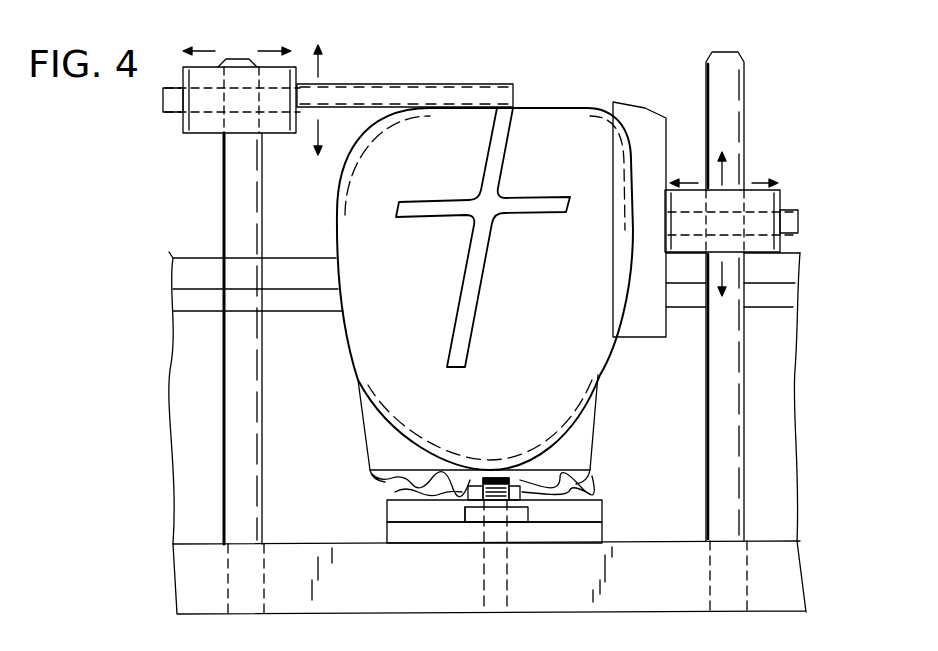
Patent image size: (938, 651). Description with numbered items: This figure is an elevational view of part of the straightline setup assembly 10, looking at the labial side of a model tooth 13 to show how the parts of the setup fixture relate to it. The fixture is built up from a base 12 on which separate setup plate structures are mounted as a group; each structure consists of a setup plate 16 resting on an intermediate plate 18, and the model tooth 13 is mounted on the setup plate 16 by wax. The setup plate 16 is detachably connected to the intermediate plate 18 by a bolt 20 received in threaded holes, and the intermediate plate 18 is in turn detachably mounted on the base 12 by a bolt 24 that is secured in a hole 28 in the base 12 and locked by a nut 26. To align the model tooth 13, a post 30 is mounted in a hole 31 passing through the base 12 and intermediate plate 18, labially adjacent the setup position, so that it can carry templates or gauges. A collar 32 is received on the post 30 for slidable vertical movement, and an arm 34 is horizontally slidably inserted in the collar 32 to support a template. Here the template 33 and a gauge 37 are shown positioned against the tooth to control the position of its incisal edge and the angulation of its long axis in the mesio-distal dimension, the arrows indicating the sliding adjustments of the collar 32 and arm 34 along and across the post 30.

The straightline setup assembly 10 is at (322, 417).
The base 12 is at (325, 560).
The model tooth 13 is at (570, 352).
The setup plate 16 is at (594, 510).
The intermediate plate 18 is at (594, 534).
The bolt 20 is at (462, 500).
The bolt 24 is at (497, 476).
The nut 26 is at (462, 508).
The hole 28 is at (484, 573).
The post 30 is at (230, 167).
The hole 31 is at (243, 568).
The collar 32 is at (298, 72).
The template 33 is at (652, 112).
The arm 34 is at (173, 90).
The gauge 37 is at (503, 138).